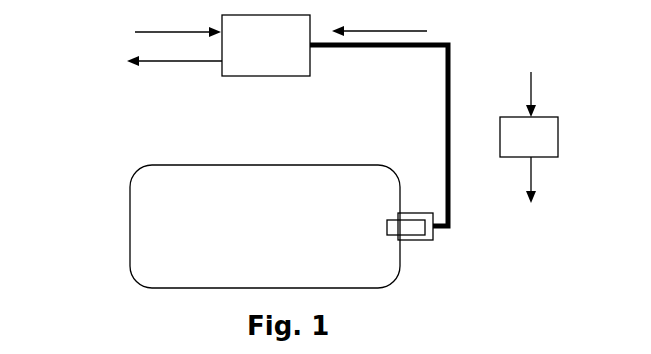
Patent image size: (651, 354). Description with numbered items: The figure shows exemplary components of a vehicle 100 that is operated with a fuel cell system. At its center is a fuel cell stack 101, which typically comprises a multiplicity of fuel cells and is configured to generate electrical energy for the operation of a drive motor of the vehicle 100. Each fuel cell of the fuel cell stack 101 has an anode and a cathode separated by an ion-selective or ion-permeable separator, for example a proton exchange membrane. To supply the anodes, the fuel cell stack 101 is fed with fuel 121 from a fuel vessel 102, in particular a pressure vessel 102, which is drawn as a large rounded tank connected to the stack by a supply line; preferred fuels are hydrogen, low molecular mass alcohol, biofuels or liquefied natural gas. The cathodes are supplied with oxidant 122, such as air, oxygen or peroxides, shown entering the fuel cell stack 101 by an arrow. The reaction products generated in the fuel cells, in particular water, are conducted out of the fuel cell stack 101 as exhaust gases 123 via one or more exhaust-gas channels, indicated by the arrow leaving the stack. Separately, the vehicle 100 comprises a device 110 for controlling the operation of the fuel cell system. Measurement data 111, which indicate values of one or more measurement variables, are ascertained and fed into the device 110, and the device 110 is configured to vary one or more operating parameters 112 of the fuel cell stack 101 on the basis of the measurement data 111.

The vehicle 100 is at (88, 143).
The fuel cell stack 101 is at (310, 57).
The fuel vessel 102 is at (265, 165).
The device 110 is at (558, 132).
The measurement data 111 is at (531, 78).
The operating parameters 112 is at (531, 173).
The fuel 121 is at (398, 31).
The oxidant 122 is at (170, 32).
The exhaust gases 123 is at (195, 61).